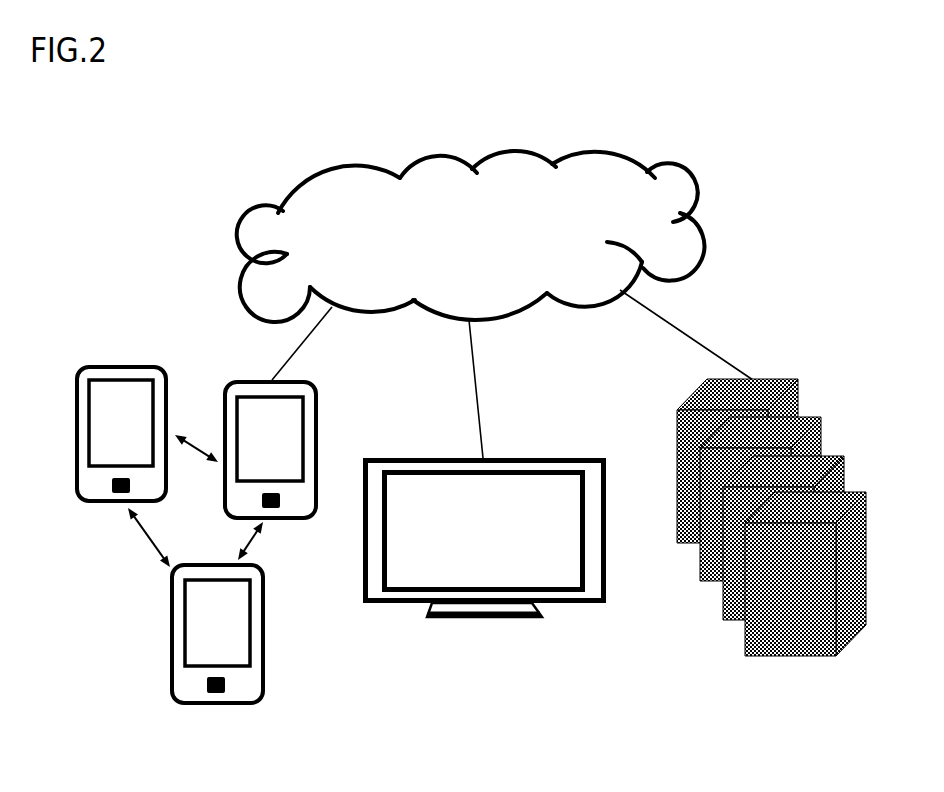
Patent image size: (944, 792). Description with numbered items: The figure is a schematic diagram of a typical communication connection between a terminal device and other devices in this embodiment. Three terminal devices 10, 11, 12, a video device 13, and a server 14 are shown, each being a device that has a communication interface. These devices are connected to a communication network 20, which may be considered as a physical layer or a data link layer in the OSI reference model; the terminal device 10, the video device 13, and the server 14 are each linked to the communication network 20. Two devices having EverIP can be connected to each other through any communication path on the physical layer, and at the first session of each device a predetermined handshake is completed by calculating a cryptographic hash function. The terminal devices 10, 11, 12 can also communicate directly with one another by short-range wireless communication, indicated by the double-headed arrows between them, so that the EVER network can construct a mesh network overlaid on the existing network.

The terminal device 10 is at (313, 382).
The terminal device 11 is at (138, 365).
The terminal device 12 is at (267, 585).
The video device 13 is at (548, 458).
The server 14 is at (778, 380).
The communication network 20 is at (625, 158).